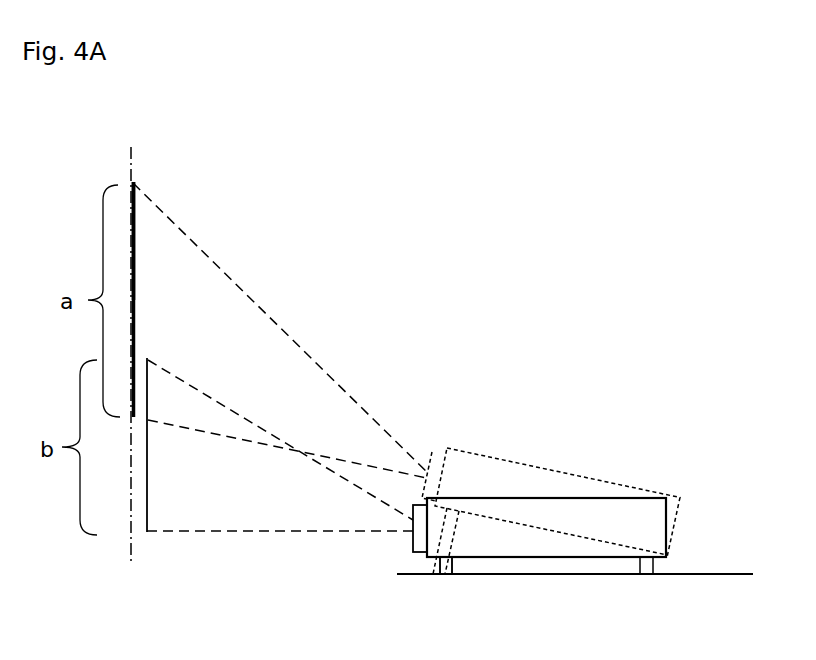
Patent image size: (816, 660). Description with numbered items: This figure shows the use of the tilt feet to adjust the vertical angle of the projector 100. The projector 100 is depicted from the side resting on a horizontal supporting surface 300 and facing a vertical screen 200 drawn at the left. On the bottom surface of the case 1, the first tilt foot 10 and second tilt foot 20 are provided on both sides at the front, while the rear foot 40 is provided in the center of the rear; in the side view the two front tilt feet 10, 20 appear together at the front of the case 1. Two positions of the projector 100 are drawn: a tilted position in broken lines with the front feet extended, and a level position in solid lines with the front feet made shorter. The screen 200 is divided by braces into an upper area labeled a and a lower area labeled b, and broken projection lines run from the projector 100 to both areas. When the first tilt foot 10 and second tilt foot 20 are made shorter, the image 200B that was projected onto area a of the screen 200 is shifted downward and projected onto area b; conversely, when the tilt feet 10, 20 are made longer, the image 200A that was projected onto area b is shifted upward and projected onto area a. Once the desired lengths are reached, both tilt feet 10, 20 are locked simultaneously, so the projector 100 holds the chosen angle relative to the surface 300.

The case 1 is at (468, 452).
The first tilt foot 10 is at (442, 576).
The second tilt foot 20 is at (446, 565).
The rear foot 40 is at (648, 576).
The projector 100 is at (532, 417).
The screen 200 is at (131, 175).
The image 200A is at (148, 475).
The image 200B is at (135, 296).
The installation surface / table 300 is at (716, 573).